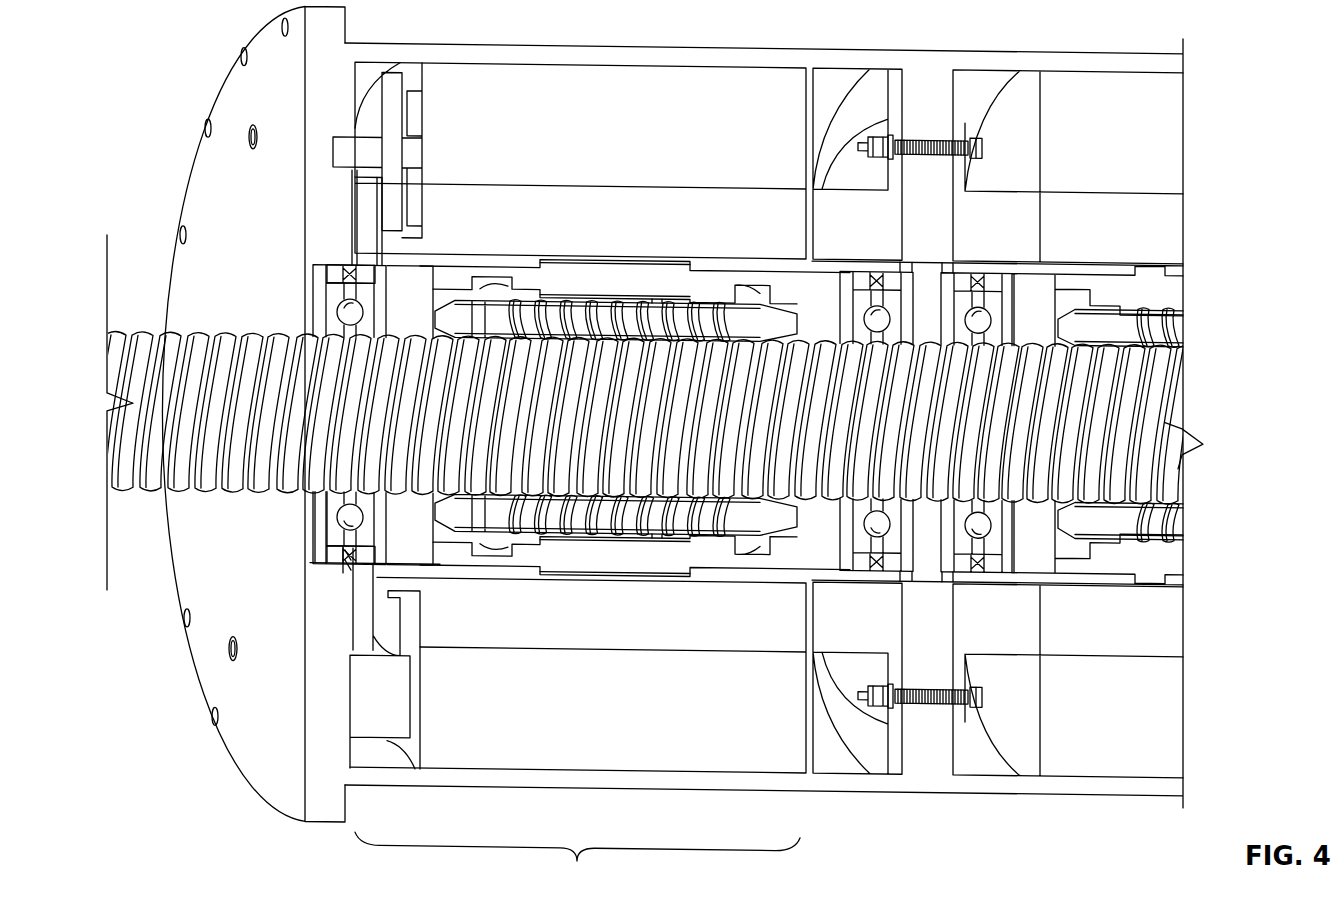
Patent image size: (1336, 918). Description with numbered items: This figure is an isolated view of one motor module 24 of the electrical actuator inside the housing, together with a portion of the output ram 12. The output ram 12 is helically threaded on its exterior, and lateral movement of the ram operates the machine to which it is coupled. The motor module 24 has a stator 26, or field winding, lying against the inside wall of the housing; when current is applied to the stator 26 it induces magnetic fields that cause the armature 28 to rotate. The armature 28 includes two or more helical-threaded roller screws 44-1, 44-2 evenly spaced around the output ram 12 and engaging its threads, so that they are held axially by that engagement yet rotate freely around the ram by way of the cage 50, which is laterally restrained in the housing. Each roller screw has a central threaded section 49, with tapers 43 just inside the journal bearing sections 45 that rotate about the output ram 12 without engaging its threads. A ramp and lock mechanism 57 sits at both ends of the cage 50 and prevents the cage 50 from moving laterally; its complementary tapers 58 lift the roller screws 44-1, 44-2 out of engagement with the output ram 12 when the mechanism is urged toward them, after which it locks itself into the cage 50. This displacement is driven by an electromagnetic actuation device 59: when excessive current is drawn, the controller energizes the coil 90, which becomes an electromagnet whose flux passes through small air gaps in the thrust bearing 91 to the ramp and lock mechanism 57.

The output ram 12 is at (1148, 402).
The integrated electrical motor module 24 is at (577, 866).
The stator 26 is at (573, 88).
The armature 28 is at (597, 272).
The tapers 43 is at (477, 255).
The helical-threaded roller screw 44-1 is at (547, 290).
The helical-threaded roller screw 44-2 is at (612, 535).
The journal bearing sections 45 is at (453, 288).
The central threaded section 49 is at (657, 285).
The cage 50 is at (627, 273).
The ramp and lock mechanism 57 is at (440, 285).
The complementary tapers 58 is at (437, 333).
The electromagnetic actuation device 59 is at (403, 288).
The coil 90 is at (318, 510).
The thrust bearing 91 is at (340, 518).